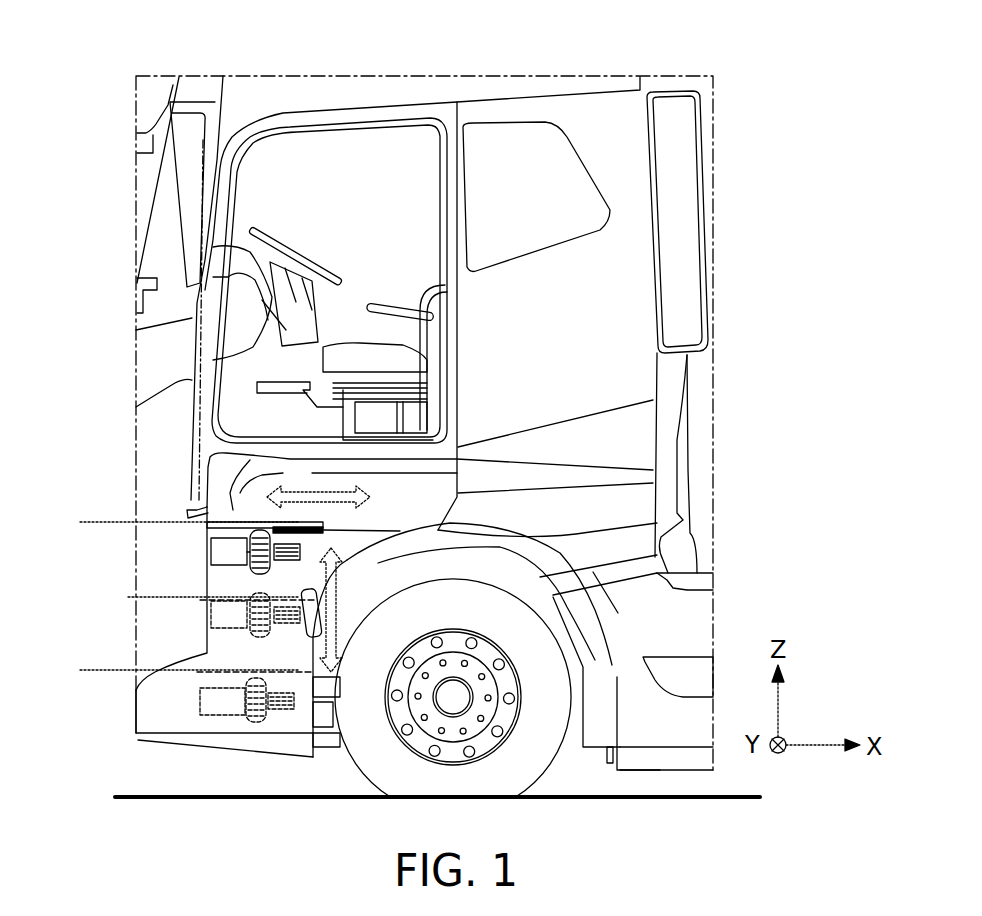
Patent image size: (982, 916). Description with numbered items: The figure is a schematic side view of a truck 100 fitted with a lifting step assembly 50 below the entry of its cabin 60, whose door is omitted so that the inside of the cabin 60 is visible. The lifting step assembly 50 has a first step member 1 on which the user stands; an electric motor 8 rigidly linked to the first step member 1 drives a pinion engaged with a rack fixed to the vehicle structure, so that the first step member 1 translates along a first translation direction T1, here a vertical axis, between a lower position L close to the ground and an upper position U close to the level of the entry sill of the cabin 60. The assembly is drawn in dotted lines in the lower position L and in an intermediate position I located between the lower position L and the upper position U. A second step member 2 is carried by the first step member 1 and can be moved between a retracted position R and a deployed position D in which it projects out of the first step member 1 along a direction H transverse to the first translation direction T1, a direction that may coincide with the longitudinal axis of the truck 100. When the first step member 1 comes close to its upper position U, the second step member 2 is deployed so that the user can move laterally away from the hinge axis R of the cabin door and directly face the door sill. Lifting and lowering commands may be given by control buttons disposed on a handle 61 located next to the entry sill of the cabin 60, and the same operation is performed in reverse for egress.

The truck 100 is at (353, 62).
The retracted position R is at (200, 227).
The cabin 60 is at (487, 358).
The handle 61 is at (413, 303).
The first step member 1 is at (197, 510).
The electric motor 8 is at (228, 555).
The second step member 2 is at (657, 523).
The lifting step assembly 50 is at (162, 565).
The upper position U is at (168, 522).
The intermediate position I is at (206, 611).
The lower position L is at (175, 690).
The direction H is at (318, 486).
The deployed position D is at (457, 495).
The first translation direction T1 is at (349, 610).